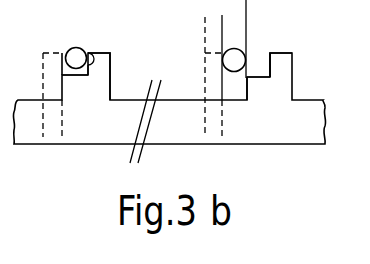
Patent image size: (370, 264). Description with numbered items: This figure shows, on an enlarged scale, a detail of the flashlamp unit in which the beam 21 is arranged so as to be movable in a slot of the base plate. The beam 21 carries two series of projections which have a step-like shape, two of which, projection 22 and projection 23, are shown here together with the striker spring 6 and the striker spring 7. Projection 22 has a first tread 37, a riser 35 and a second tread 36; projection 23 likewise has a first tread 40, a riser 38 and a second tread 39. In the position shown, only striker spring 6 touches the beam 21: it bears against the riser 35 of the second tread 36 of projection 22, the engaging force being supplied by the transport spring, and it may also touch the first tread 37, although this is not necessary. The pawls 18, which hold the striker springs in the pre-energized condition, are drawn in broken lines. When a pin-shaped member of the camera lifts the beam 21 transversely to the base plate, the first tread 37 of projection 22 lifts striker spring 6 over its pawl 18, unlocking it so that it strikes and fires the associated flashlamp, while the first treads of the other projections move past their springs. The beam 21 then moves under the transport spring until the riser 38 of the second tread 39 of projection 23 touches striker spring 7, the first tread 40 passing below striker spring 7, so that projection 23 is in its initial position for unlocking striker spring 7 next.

The striker spring 6 is at (76, 58).
The striker spring 7 is at (232, 62).
The pawl 18 is at (50, 53).
The beam 21 is at (113, 127).
The projection 22 is at (118, 61).
The projection 23 is at (296, 50).
The riser 35 is at (100, 67).
The second tread 36 is at (102, 67).
The first tread 37 is at (75, 82).
The riser 38 is at (270, 59).
The second tread 39 is at (280, 68).
The first tread 40 is at (258, 83).